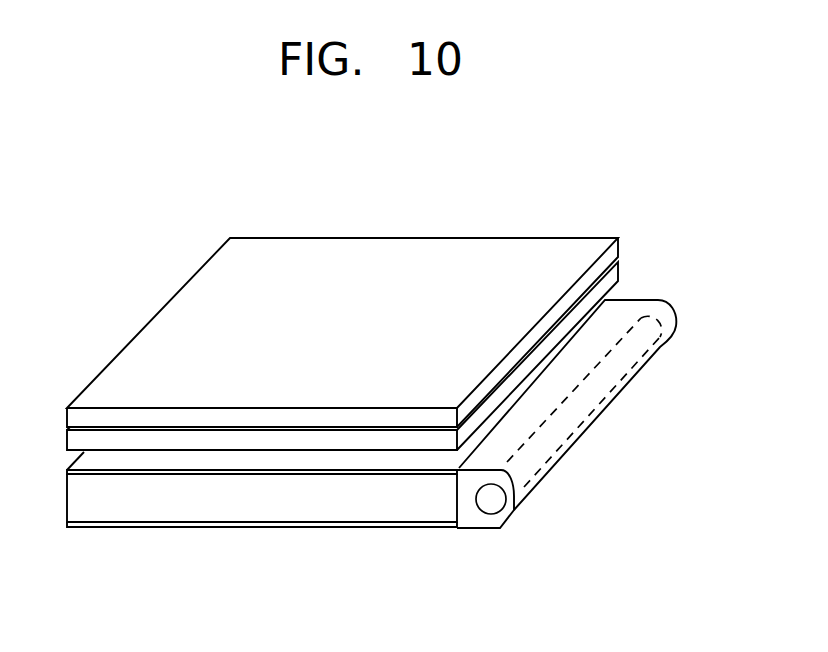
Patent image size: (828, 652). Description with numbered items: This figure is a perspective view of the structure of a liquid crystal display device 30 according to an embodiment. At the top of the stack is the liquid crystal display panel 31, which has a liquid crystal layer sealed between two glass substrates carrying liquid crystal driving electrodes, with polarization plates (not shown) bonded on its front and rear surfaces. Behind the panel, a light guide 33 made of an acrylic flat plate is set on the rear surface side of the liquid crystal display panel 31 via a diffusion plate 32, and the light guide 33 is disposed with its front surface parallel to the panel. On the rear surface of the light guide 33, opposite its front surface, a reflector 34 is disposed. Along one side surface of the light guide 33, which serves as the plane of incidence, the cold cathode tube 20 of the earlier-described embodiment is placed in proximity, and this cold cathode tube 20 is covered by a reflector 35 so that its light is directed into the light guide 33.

The liquid crystal display device 30 is at (633, 184).
The liquid crystal display panel 31 is at (390, 249).
The diffusion plate 32 is at (337, 470).
The light guide 33 is at (267, 510).
The reflector 34 is at (182, 525).
The reflector 35 is at (652, 300).
The cold cathode tube 20 is at (491, 500).